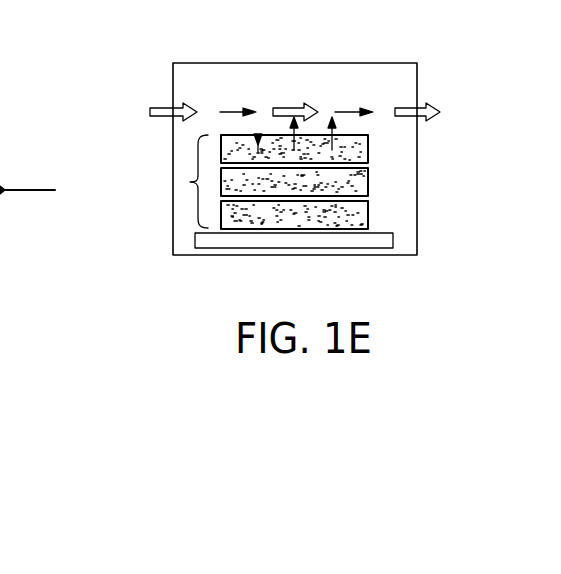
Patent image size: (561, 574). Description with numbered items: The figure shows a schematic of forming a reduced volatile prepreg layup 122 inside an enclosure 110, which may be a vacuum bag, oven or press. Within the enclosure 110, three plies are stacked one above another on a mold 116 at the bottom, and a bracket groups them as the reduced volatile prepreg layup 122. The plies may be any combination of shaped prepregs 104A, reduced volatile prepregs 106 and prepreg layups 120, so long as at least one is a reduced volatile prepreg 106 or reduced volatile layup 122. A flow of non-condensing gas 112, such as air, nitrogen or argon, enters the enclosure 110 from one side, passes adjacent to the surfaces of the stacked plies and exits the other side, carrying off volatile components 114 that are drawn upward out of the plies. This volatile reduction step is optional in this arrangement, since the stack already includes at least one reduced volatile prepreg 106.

The enclosure 110 is at (252, 63).
The non-condensing gas 112 is at (150, 110).
The volatile components 114 is at (258, 136).
The mold 116 is at (357, 240).
The reduced volatile prepreg layup 122 is at (190, 182).
The shaped prepreg 104A is at (379, 185).
The reduced volatile prepreg 106 is at (294, 182).
The prepreg layup 120 is at (368, 148).